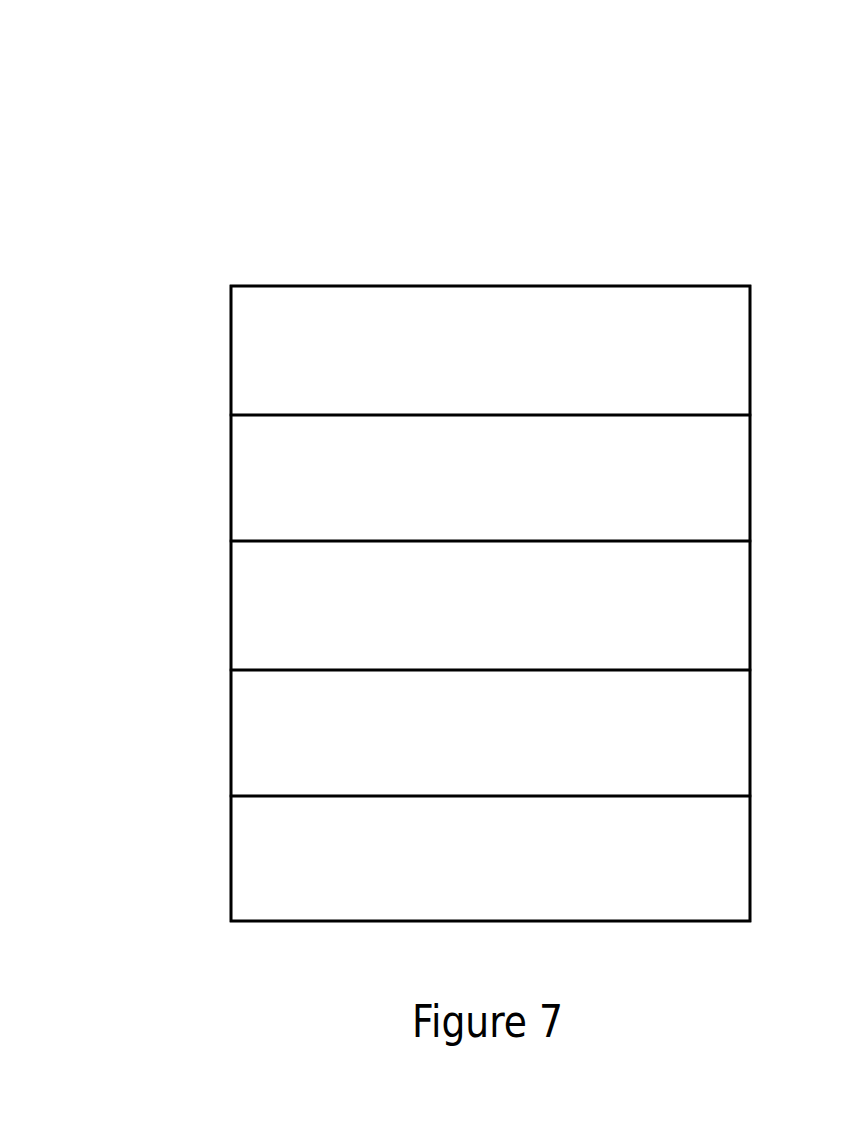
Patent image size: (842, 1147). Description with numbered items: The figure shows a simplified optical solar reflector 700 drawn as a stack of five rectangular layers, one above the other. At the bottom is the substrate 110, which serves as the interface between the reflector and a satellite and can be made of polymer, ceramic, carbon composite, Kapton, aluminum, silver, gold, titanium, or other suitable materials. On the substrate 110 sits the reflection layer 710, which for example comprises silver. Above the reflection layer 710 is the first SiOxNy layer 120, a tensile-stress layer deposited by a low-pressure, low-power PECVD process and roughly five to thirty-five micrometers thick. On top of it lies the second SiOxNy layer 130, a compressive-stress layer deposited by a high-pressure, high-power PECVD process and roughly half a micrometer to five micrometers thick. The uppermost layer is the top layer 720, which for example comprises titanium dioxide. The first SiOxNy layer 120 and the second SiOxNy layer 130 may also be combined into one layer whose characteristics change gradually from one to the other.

The optical solar reflector 700 is at (196, 151).
The top layer 720 is at (490, 350).
The second SiOxNy layer 130 is at (490, 478).
The first SiOxNy layer 120 is at (490, 605).
The reflection layer 710 is at (490, 733).
The substrate 110 is at (490, 858).